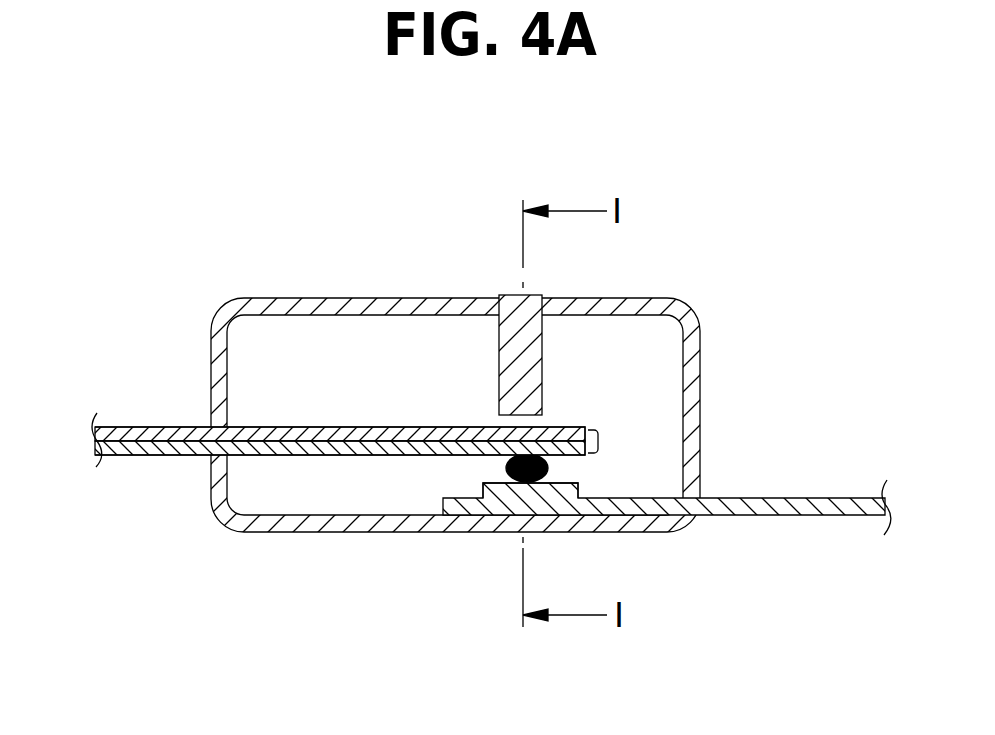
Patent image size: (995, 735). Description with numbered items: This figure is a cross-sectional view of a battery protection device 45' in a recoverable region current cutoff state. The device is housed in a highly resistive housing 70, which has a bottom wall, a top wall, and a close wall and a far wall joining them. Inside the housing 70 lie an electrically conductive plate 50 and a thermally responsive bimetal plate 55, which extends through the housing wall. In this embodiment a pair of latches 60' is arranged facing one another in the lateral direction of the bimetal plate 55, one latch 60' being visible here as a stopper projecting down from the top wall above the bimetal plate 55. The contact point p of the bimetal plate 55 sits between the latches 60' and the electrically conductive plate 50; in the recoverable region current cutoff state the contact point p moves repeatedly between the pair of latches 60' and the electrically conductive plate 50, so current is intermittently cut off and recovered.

The battery protection device 45' is at (470, 399).
The housing 70 is at (345, 297).
The latches 60' is at (502, 323).
The bimetal plate 55 is at (600, 446).
The electrically conductive plate 50 is at (813, 514).
The contact point p is at (504, 472).